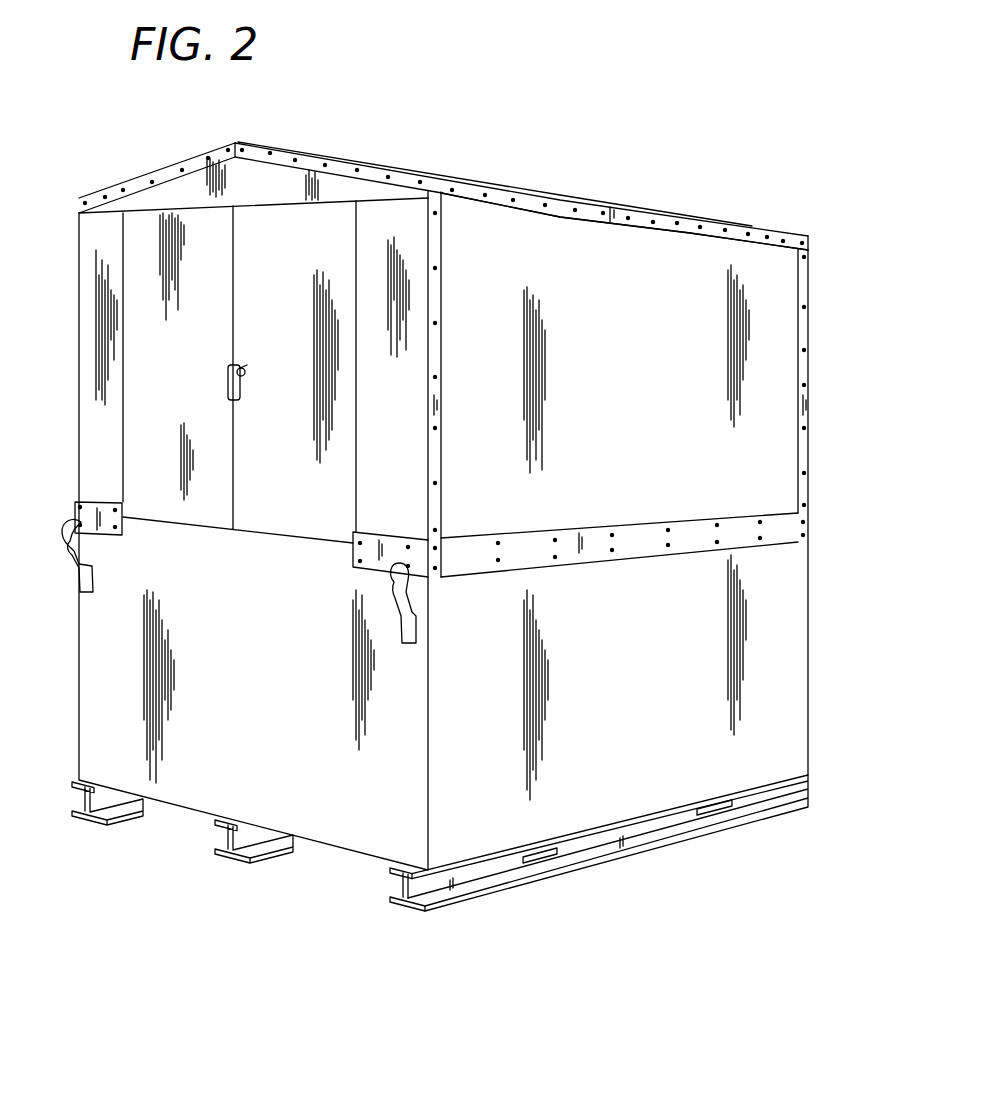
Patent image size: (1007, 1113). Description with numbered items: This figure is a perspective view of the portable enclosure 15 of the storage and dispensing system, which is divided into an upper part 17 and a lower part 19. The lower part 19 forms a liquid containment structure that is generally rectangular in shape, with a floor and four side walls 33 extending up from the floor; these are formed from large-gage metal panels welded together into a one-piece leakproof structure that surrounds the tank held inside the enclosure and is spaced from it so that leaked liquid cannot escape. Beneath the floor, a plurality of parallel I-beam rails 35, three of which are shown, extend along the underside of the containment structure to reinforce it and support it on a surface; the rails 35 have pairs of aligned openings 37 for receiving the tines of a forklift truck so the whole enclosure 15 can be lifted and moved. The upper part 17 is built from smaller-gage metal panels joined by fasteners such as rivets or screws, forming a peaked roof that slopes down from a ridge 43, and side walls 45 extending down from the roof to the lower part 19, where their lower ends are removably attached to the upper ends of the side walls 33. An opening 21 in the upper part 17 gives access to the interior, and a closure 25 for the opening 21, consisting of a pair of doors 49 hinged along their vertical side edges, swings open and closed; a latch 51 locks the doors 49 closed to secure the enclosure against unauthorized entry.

The portable enclosure 15 is at (695, 150).
The upper part 17 is at (815, 355).
The lower part 19 is at (818, 632).
The opening 21 is at (278, 207).
The closure 25 is at (135, 270).
The side walls 33 is at (110, 642).
The I-beam rails 35 is at (113, 812).
The openings 37 is at (547, 862).
The ridge 43 is at (236, 143).
The side walls 45 is at (368, 187).
The doors 49 is at (167, 333).
The latch 51 is at (228, 378).